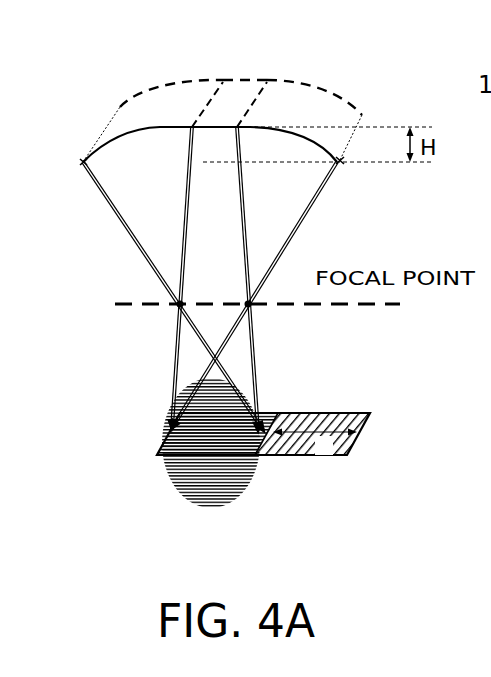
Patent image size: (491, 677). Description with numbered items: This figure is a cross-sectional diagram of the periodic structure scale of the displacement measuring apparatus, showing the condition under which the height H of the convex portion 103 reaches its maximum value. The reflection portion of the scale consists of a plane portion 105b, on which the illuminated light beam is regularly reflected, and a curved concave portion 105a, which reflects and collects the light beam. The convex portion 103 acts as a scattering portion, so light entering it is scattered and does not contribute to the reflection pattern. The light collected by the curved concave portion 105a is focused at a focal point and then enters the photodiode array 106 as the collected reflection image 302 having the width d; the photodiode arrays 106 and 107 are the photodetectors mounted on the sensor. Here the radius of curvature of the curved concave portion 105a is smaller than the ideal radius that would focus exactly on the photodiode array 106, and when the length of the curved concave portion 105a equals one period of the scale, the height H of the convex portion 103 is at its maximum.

The convex portion 103 is at (94, 138).
The curved concave portion 105a is at (221, 55).
The plane portion 105b is at (238, 82).
The photodiode array 106 is at (268, 410).
The photodiode array 107 is at (272, 455).
The collected reflection image 302 is at (198, 492).